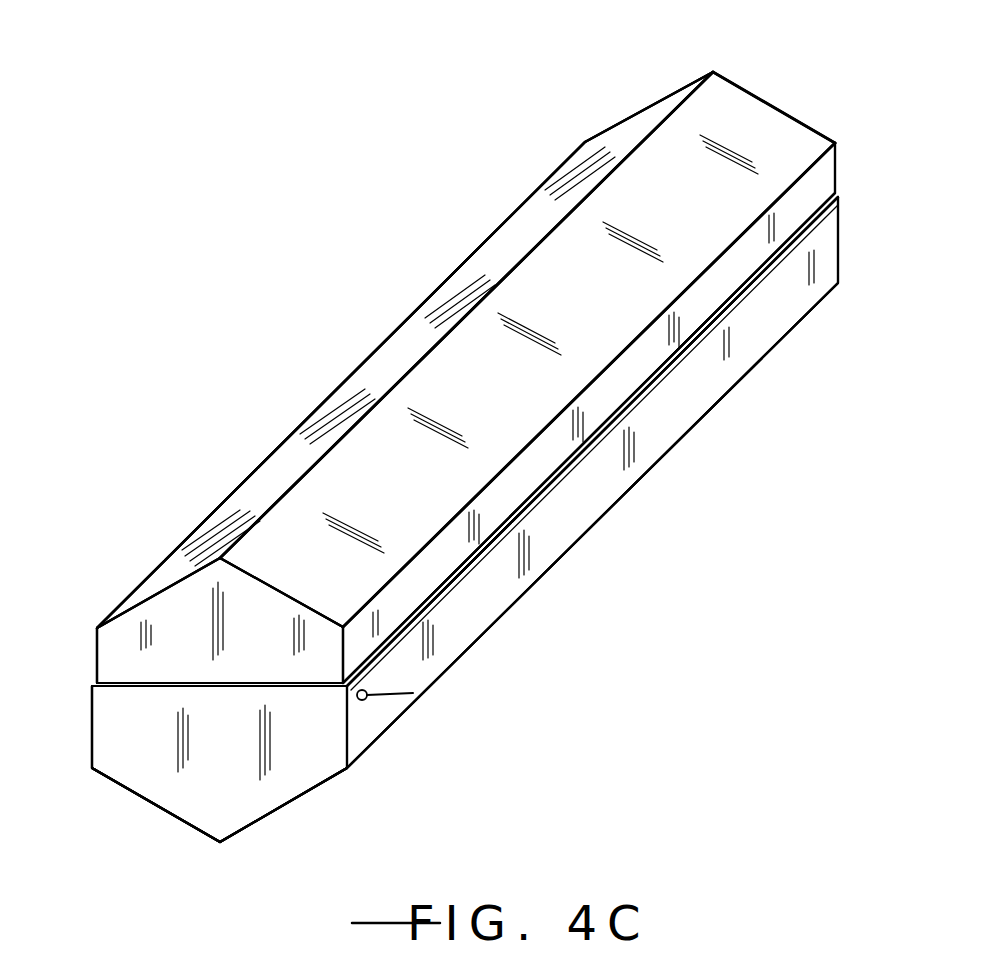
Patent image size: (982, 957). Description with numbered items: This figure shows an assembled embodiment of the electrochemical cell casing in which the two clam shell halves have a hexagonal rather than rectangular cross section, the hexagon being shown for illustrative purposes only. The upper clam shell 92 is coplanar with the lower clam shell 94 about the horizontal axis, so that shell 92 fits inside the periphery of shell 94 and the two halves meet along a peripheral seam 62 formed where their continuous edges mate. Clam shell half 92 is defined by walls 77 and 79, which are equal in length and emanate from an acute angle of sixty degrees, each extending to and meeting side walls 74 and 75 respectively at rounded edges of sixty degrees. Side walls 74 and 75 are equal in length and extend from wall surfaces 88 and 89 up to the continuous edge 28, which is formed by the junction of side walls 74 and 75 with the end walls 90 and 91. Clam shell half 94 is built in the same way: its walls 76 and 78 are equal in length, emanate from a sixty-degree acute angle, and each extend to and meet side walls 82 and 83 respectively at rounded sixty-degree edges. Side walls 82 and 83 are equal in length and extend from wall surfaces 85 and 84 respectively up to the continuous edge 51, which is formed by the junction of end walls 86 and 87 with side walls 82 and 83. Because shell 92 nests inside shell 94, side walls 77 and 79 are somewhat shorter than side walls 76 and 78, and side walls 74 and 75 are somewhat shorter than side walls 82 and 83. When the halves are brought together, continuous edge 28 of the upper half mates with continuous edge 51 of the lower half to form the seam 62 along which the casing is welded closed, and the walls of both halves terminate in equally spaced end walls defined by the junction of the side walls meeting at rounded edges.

The continuous edge 28 is at (565, 458).
The continuous edge 51 is at (532, 503).
The peripheral seam 62 is at (553, 482).
The side wall 74 is at (95, 665).
The side wall 75 is at (450, 560).
The side wall 76 is at (283, 805).
The side wall 77 is at (343, 473).
The side wall 78 is at (156, 810).
The side wall 79 is at (228, 510).
The side wall 82 is at (92, 747).
The side wall 83 is at (347, 730).
The wall surface 84 is at (113, 788).
The wall surface 85 is at (475, 620).
The end wall 86 is at (213, 815).
The end wall 87 is at (844, 250).
The wall surface 88 is at (573, 172).
The wall surface 89 is at (523, 272).
The end wall 90 is at (112, 648).
The end wall 91 is at (796, 118).
The clam shell 92 is at (150, 555).
The clam shell 94 is at (268, 822).